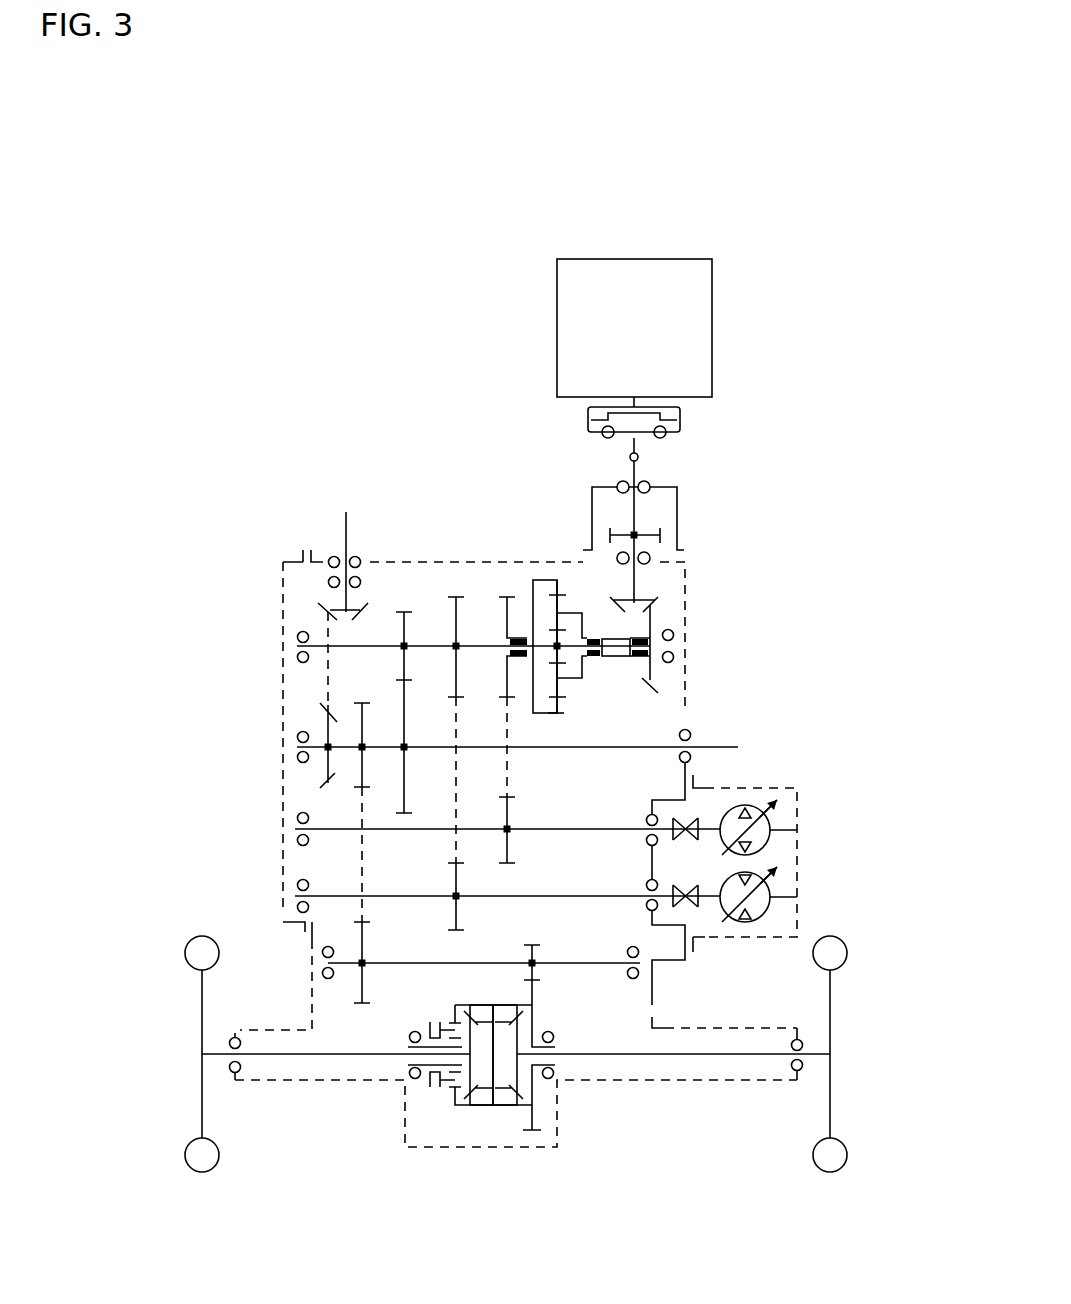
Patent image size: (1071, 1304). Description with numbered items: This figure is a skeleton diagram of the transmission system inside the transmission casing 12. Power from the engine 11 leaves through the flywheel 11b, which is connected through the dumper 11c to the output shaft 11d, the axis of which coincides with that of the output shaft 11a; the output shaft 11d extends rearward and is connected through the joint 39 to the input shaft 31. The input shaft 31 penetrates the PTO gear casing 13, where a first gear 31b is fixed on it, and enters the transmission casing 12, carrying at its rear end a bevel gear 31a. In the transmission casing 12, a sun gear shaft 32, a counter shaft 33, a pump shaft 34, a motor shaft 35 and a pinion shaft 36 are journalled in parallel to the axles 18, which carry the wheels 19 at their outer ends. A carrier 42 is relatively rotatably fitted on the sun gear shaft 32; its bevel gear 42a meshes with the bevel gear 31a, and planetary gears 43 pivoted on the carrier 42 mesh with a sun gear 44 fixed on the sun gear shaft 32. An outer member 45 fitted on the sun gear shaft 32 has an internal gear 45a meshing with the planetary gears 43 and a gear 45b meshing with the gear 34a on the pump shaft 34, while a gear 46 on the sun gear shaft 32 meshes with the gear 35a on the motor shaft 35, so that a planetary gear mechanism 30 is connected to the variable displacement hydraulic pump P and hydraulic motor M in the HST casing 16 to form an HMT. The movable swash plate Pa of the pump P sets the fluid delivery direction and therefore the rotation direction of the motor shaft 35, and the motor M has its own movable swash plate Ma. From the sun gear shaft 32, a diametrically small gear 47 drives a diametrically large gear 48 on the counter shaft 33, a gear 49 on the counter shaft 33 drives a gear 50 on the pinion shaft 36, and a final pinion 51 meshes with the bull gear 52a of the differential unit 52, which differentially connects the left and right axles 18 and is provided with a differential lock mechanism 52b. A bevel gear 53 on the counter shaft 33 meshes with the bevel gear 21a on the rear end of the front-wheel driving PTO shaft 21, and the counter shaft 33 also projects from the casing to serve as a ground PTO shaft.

The engine 11 is at (608, 330).
The output shaft 11a is at (637, 402).
The flywheel 11b is at (680, 414).
The dumper 11c is at (647, 437).
The output shaft 11d is at (628, 447).
The joint 39 is at (642, 458).
The input shaft 31 is at (633, 508).
The PTO gear casing 13 is at (722, 510).
The first gear 31b is at (670, 540).
The bevel gear 31a is at (610, 592).
The front-wheel driving PTO shaft 21 is at (346, 523).
The bevel gear 21a is at (322, 605).
The gear 45b is at (507, 597).
The gear 46 is at (456, 597).
The planetary gears 43 is at (555, 603).
The sun gear 44 is at (582, 613).
The diametrically small gear 47 is at (404, 612).
The gear 49 is at (364, 703).
The diametrically large gear 48 is at (404, 738).
The bevel gear 53 is at (320, 702).
The sun gear shaft 32 is at (675, 642).
The planetary gear mechanism 30 is at (673, 680).
The carrier 42 is at (583, 663).
The bevel gear 42a is at (650, 692).
The counter shaft 33 is at (725, 745).
The outer member 45 is at (548, 713).
The internal gear 45a is at (562, 717).
The pump shaft 34 is at (530, 828).
The gear 34a is at (510, 842).
The gear 35a is at (456, 878).
The motor shaft 35 is at (555, 893).
The movable swash plate Pa is at (775, 797).
The variable displacement hydraulic pump P is at (772, 827).
The HST casing 16 is at (798, 855).
The movable swash plate Ma is at (778, 873).
The variable displacement hydraulic motor M is at (777, 900).
The pinion shaft 36 is at (577, 962).
The final pinion 51 is at (527, 945).
The gear 50 is at (358, 933).
The wheels 19 is at (200, 995).
The axles 18 is at (310, 1057).
The transmission casing 12 is at (433, 1147).
The differential unit 52 is at (511, 1124).
The bull gear 52a is at (540, 1118).
The differential lock mechanism 52b is at (428, 1104).